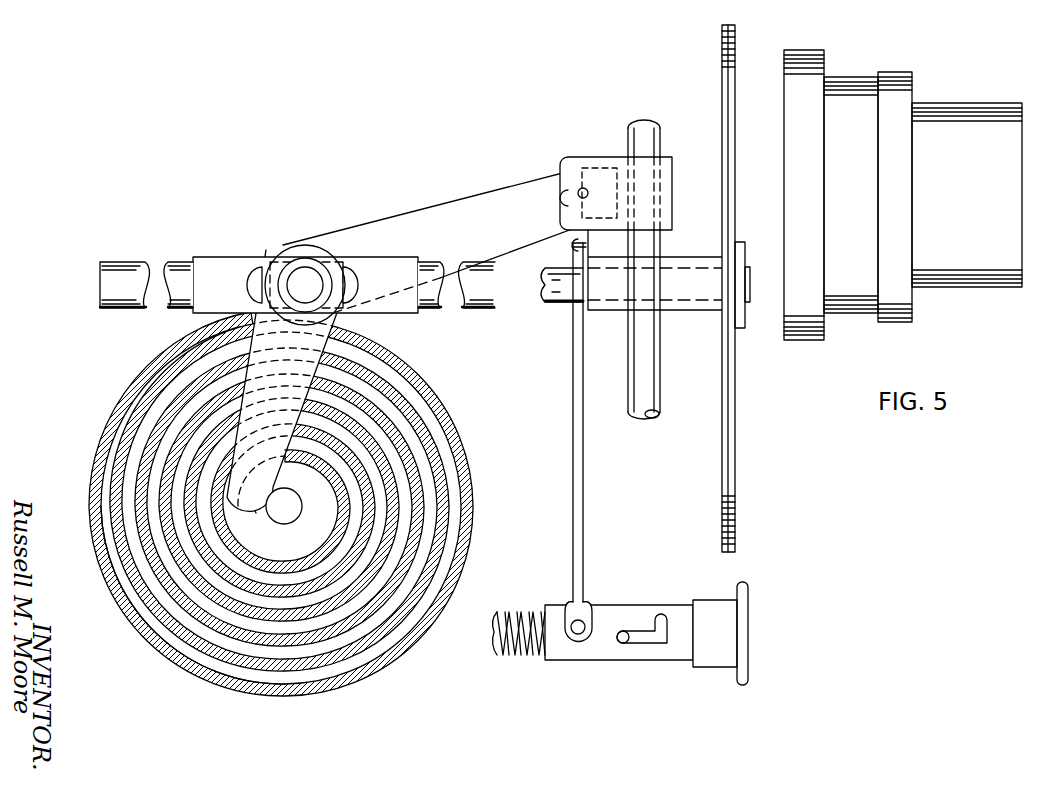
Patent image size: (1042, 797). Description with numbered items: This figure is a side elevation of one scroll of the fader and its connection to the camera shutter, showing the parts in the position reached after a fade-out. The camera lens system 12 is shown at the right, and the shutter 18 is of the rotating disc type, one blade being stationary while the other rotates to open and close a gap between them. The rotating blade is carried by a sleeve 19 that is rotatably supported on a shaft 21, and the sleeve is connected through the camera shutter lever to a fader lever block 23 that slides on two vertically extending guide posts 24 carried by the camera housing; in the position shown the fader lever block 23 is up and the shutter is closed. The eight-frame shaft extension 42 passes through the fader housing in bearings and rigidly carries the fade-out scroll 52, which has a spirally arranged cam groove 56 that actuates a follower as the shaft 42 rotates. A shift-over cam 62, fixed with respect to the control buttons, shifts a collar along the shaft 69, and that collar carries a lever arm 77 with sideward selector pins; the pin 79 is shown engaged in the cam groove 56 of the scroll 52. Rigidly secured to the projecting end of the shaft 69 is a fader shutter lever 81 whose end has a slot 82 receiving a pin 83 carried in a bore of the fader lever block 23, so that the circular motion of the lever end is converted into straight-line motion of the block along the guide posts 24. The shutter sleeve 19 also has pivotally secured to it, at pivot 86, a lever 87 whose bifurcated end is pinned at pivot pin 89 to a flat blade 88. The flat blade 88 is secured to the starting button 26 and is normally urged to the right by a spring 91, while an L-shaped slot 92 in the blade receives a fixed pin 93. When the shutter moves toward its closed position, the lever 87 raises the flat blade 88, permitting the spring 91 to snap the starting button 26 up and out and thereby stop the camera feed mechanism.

The lens system 12 is at (955, 103).
The shutter 18 is at (738, 383).
The sleeve 19 is at (680, 260).
The shaft 21 is at (540, 296).
The fader lever block 23 is at (672, 185).
The guide posts 24 is at (650, 360).
The starting button 26 is at (747, 605).
The eight-frame shaft extension 42 is at (295, 498).
The fade-out scroll 52 is at (97, 547).
The cam groove 56 is at (118, 573).
The shift-over cam 62 is at (221, 262).
The shaft 69 is at (295, 275).
The lever arm 77 is at (253, 318).
The pin 79 is at (256, 513).
The fader shutter lever 81 is at (467, 213).
The slot 82 is at (568, 194).
The pin 83 is at (586, 188).
The pivot 86 is at (586, 245).
The lever 87 is at (583, 446).
The flat blade 88 is at (625, 612).
The pivot pin 89 is at (585, 622).
The spring 91 is at (516, 610).
The L-shaped slot 92 is at (657, 644).
The fixed pin 93 is at (623, 644).